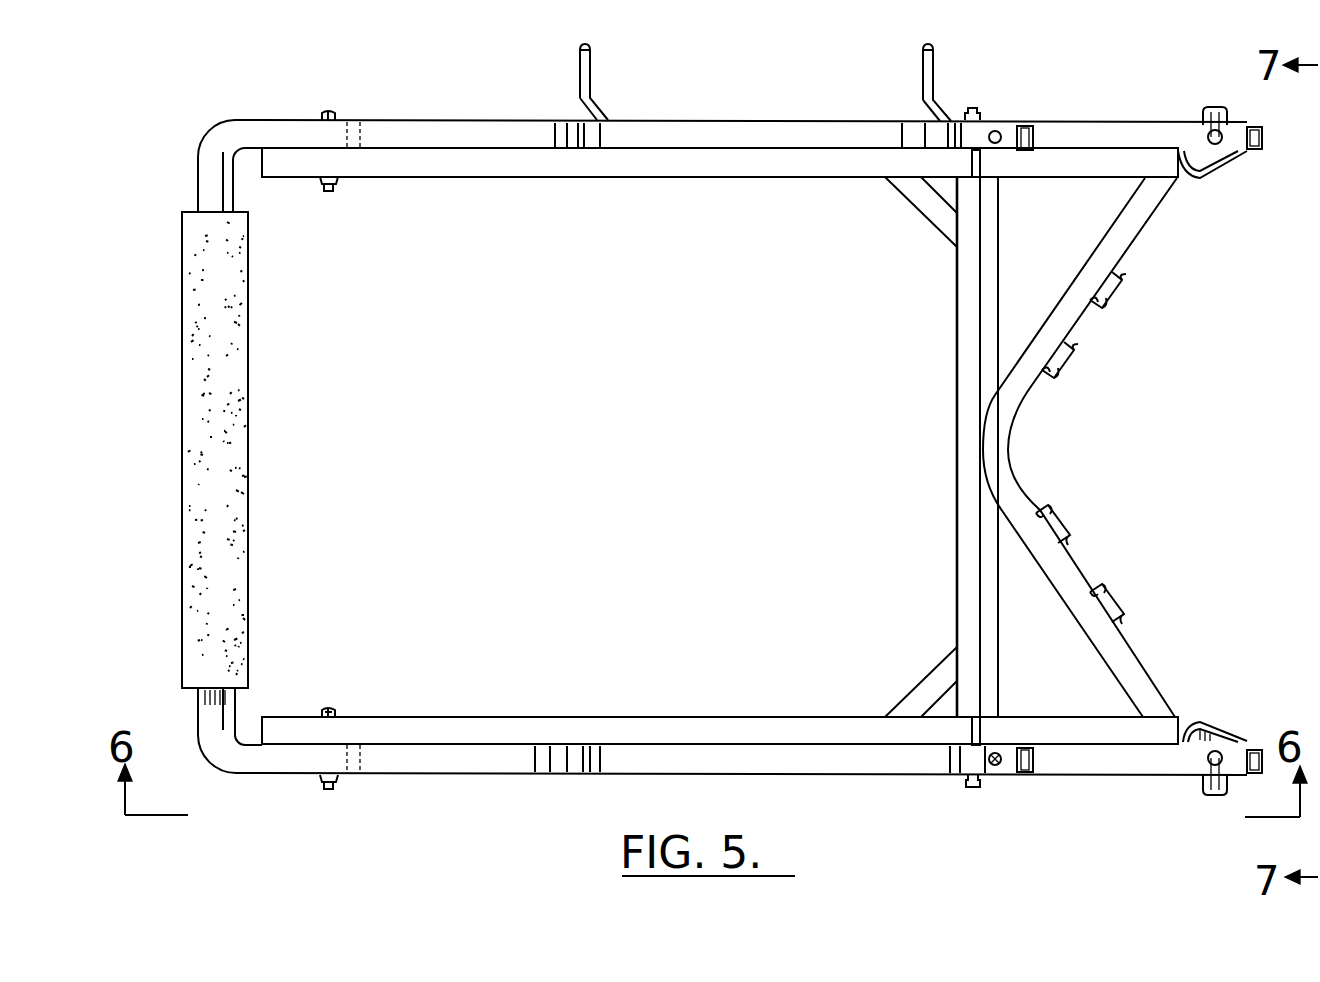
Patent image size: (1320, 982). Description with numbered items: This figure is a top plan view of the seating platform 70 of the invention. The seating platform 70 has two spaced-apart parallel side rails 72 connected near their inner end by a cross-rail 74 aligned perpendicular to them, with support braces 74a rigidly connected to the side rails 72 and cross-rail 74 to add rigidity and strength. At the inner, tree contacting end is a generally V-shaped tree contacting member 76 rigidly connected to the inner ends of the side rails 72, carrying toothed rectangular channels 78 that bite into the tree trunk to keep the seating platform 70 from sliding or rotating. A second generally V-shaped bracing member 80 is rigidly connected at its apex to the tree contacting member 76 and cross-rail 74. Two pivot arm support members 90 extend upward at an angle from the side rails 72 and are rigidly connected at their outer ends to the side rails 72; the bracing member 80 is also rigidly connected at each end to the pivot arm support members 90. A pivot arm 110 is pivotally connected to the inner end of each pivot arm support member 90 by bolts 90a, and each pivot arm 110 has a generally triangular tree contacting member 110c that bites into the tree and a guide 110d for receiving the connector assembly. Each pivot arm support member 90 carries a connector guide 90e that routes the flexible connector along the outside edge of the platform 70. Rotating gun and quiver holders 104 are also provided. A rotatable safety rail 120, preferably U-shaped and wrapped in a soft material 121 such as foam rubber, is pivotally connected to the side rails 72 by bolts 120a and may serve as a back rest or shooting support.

The seating platform 70 is at (722, 100).
The side rails 72 is at (642, 180).
The cross-rail 74 is at (956, 522).
The support braces 74a is at (917, 218).
The tree contacting member 76 is at (1155, 246).
The rectangular channels 78 is at (1122, 302).
The bracing member 80 is at (1005, 306).
The pivot arm support members 90 is at (383, 120).
The bolts 90a is at (999, 128).
The connector guide 90e is at (968, 161).
The rotating gun and quiver holders 104 is at (588, 74).
The pivot arm 110 is at (1120, 112).
The tree contacting member 110c is at (1214, 176).
The guide 110d is at (1212, 107).
The rotatable safety rail 120 is at (268, 449).
The bolts 120a is at (328, 192).
The soft material 121 is at (250, 292).